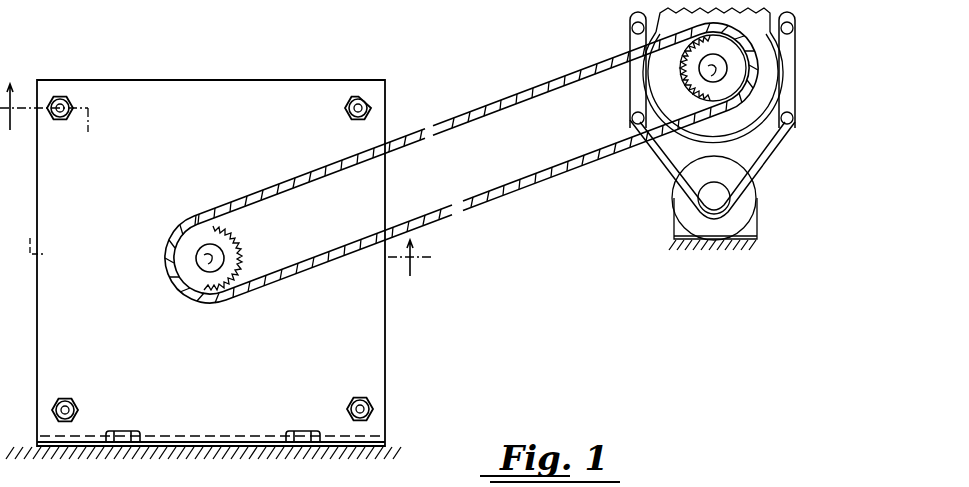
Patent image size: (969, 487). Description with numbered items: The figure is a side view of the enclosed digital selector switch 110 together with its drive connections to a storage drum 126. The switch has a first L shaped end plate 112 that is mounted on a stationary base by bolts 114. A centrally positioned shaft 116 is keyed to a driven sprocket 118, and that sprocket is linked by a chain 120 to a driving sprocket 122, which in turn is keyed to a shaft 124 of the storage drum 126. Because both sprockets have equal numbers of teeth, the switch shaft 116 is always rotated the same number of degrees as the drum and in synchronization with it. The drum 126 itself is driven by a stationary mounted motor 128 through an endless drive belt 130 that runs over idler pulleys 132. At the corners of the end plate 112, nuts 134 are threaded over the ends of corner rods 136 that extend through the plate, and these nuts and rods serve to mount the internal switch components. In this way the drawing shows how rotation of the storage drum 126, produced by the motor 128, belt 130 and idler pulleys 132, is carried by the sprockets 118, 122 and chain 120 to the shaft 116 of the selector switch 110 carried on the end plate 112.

The digital selector switch 110 is at (289, 69).
The first L shaped end plate 112 is at (203, 269).
The bolts 114 is at (122, 430).
The shaft 116 is at (203, 266).
The driven sprocket 118 is at (244, 244).
The chain 120 is at (462, 218).
The driving sprocket 122 is at (717, 100).
The shaft 124 is at (718, 46).
The storage drum 126 is at (660, 90).
The motor 128 is at (674, 205).
The endless drive belt 130 is at (648, 150).
The idler pulleys 132 is at (632, 28).
The nuts 134 is at (61, 122).
The corner rods 136 is at (69, 105).